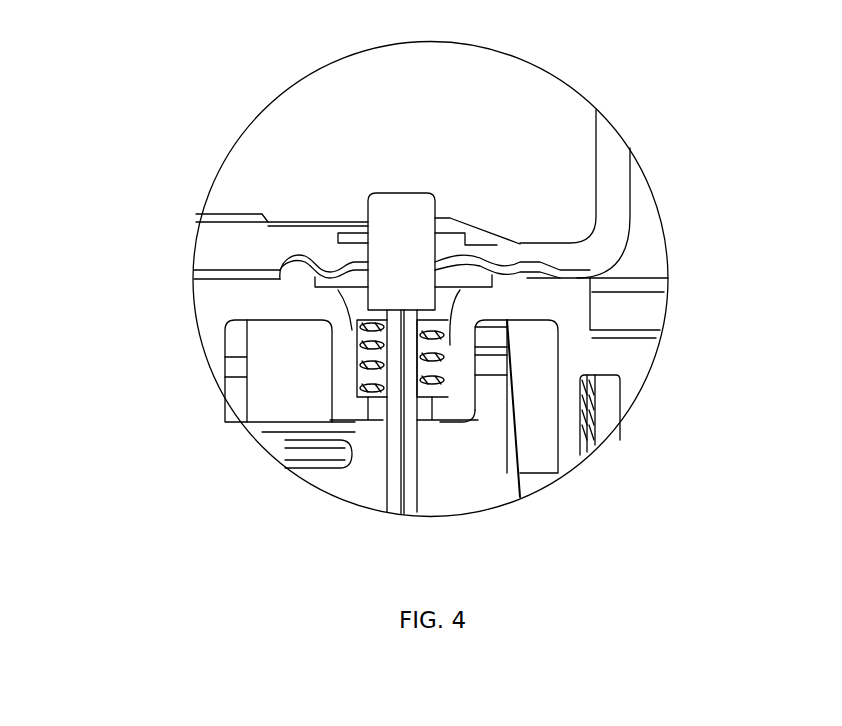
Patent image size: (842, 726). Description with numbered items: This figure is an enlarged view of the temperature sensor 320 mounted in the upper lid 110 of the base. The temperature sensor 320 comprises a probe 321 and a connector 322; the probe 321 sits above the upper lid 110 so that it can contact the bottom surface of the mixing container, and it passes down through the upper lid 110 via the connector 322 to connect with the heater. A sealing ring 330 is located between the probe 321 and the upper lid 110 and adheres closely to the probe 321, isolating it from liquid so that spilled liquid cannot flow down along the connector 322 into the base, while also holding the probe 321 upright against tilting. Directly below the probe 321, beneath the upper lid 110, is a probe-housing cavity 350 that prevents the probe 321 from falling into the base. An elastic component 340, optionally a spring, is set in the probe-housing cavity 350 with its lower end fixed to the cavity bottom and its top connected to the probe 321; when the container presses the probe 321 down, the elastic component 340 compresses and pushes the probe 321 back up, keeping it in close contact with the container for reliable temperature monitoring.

The upper lid 110 is at (265, 280).
The temperature sensor 320 is at (160, 525).
The probe 321 is at (402, 282).
The connector 322 is at (400, 458).
The sealing ring 330 is at (518, 260).
The elastic component 340 is at (450, 335).
The probe-housing cavity 350 is at (450, 410).